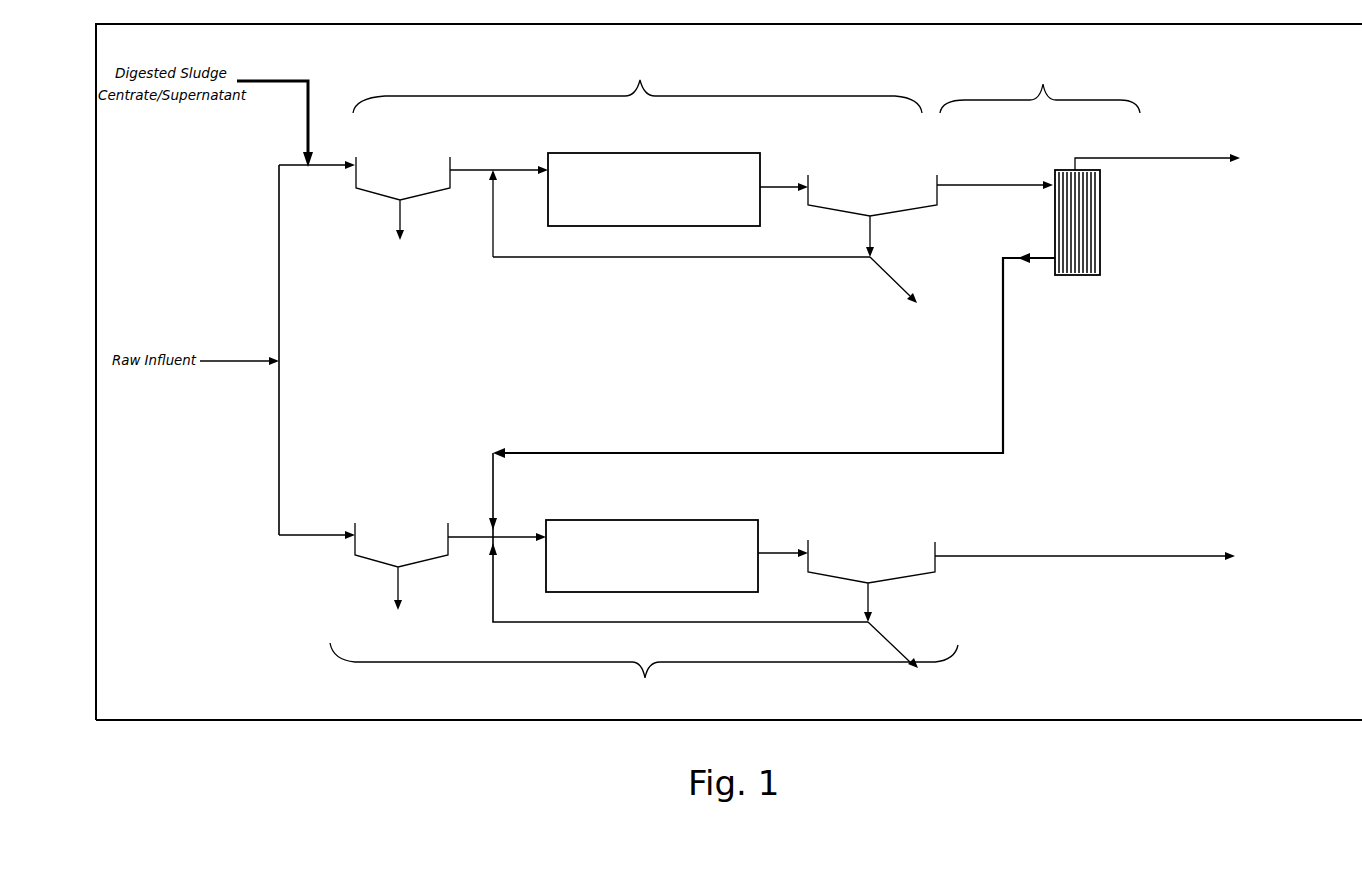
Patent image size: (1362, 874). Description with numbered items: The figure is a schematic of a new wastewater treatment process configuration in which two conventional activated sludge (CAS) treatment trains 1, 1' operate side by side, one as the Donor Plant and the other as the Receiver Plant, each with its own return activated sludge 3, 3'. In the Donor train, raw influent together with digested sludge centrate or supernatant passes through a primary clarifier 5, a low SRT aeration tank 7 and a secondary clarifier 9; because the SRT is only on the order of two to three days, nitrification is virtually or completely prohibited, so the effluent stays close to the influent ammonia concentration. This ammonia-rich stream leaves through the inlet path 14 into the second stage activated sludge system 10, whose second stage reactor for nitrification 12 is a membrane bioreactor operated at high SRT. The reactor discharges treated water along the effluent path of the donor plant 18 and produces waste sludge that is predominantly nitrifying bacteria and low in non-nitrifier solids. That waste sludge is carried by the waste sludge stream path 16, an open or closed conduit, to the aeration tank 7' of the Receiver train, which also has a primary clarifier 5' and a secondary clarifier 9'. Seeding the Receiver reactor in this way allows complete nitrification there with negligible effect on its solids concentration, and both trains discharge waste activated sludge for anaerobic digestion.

The CAS treatment train 1 is at (637, 80).
The return activated sludge 3 is at (679, 249).
The primary clarifier 5 is at (411, 217).
The aeration tank 7 is at (654, 226).
The secondary clarifier 9 is at (885, 250).
The second stage activated sludge system 10 is at (1093, 88).
The second stage reactor for nitrification 12 is at (1113, 233).
The inlet path for effluent from the CAS 14 is at (1055, 137).
The waste sludge stream path 16 is at (1038, 272).
The effluent path of the donor plant 18 is at (1182, 145).
The CAS treatment train 1' is at (644, 672).
The return activated sludge 3' is at (462, 574).
The primary clarifier 5' is at (360, 584).
The aeration tank 7' is at (695, 546).
The secondary clarifier 9' is at (1077, 616).